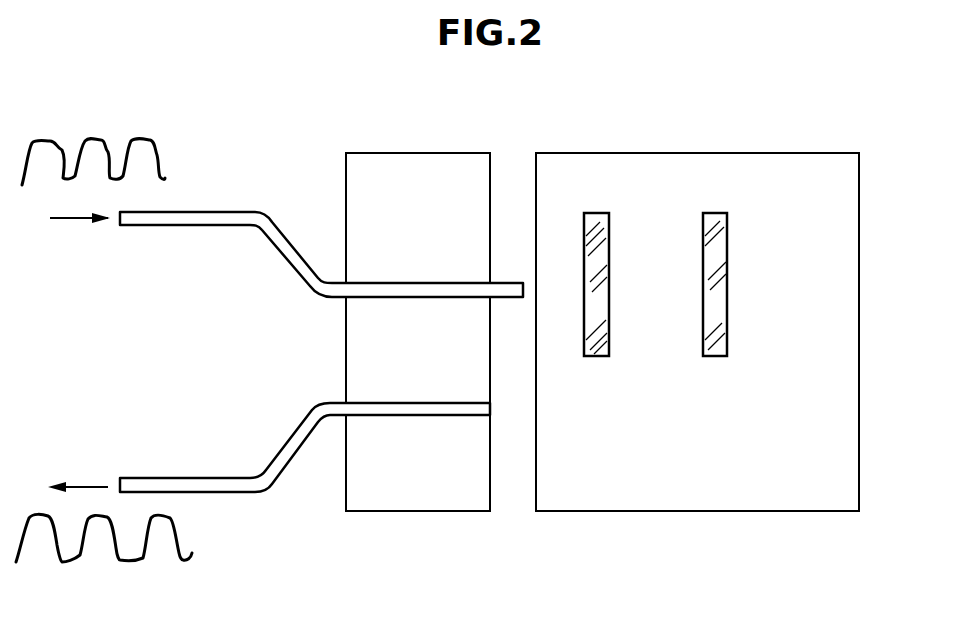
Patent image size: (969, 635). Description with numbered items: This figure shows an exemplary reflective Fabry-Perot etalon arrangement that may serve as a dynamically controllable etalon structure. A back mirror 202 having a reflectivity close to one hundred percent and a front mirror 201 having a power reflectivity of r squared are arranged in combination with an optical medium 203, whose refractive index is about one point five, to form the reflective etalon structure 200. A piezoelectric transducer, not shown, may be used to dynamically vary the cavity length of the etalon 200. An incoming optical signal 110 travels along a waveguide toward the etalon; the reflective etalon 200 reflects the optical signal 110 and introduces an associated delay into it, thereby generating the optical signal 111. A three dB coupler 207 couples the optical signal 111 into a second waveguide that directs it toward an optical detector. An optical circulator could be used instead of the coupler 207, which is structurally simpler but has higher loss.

The optical signal 110 is at (110, 120).
The optical signal 111 is at (128, 607).
The three dB coupler 207 is at (462, 166).
The reflective etalon structure 200 is at (786, 178).
The front mirror 201 is at (610, 225).
The back mirror 202 is at (722, 288).
The optical medium 203 is at (658, 232).